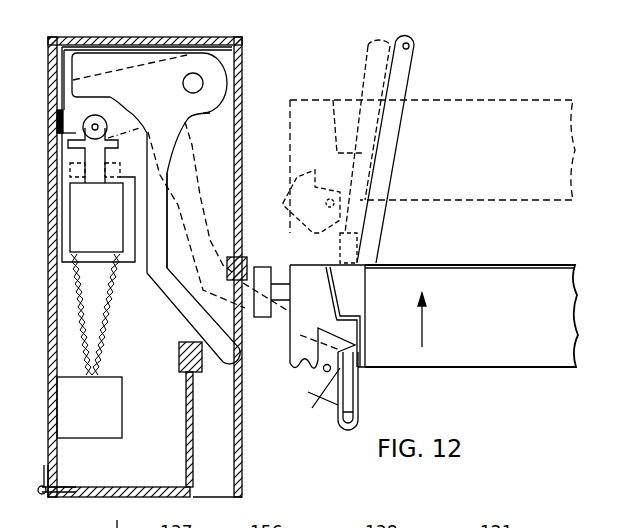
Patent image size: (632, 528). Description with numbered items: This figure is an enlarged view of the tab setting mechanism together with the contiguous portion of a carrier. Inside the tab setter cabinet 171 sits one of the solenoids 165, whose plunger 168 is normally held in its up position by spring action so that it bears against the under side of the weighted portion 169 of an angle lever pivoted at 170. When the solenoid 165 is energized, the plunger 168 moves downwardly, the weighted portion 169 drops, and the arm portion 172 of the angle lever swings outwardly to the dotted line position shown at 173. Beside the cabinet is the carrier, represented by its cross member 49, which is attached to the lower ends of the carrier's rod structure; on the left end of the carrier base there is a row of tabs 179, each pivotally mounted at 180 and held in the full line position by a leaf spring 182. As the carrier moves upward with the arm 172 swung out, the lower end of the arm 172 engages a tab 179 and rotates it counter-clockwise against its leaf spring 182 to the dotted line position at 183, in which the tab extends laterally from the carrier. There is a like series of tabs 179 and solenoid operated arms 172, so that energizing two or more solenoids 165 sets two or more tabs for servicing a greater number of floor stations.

The cross member 49 is at (499, 344).
The solenoid 165 is at (112, 243).
The plunger 168 is at (100, 130).
The weighted portion 169 is at (121, 98).
The pivot 170 is at (199, 81).
The tab setter cabinet 171 is at (242, 122).
The arm portion 172 is at (226, 364).
The dotted line position 173 is at (283, 308).
The tab 179 is at (301, 373).
The pivot mounting 180 is at (309, 399).
The leaf spring 182 is at (358, 428).
The dotted line position 183 is at (429, 150).